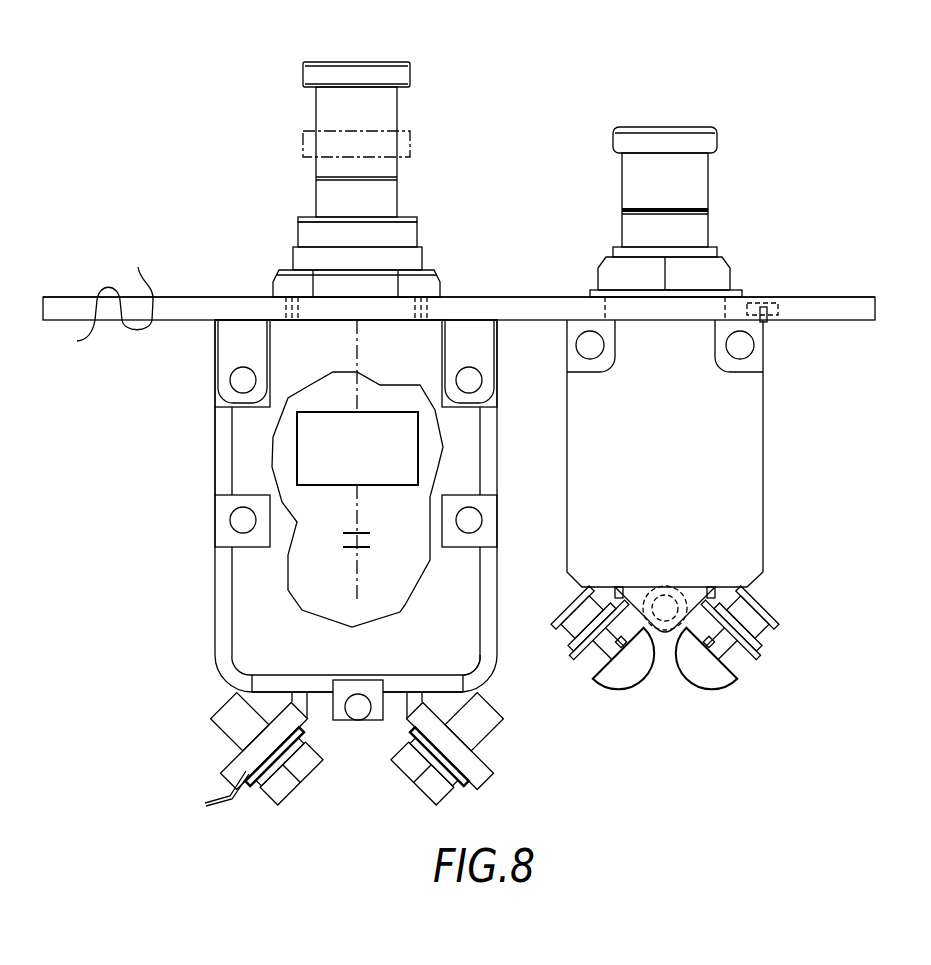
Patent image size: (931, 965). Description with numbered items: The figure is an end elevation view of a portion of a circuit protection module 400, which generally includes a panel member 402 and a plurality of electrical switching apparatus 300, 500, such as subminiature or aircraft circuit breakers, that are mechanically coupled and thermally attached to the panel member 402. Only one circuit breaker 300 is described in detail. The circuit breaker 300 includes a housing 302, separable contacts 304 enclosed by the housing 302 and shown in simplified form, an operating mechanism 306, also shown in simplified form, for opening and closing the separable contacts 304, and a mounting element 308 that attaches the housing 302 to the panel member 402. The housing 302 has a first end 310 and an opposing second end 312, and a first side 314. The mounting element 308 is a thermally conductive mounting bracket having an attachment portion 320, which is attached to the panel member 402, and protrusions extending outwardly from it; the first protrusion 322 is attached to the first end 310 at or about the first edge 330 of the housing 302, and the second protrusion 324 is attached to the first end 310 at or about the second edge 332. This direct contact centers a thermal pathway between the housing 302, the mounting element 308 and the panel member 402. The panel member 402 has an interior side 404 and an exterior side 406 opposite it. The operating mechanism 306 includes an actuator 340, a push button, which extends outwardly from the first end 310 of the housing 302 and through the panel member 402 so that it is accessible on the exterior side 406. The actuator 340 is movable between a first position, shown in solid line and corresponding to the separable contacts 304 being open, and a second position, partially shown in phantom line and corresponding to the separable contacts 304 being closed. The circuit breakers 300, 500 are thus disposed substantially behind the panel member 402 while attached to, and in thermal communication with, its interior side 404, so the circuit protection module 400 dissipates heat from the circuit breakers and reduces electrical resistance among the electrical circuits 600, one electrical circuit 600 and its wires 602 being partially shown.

The circuit breaker 300 is at (189, 682).
The housing 302 is at (214, 486).
The separable contacts 304 is at (362, 547).
The operating mechanism 306 is at (343, 485).
The mounting element 308 is at (199, 349).
The first end 310 is at (515, 336).
The second end 312 is at (522, 682).
The first side 314 is at (459, 647).
The attachment portion 320 is at (213, 327).
The first protrusion 322 is at (253, 342).
The second protrusion 324 is at (453, 342).
The first edge 330 is at (217, 433).
The second edge 332 is at (490, 445).
The actuator 340 is at (377, 62).
The circuit protection module 400 is at (114, 428).
The panel member 402 is at (88, 282).
The interior side 404 is at (138, 284).
The exterior side 406 is at (84, 320).
The electrical switching apparatus 500 is at (777, 569).
The electrical circuit 600 is at (213, 826).
The wires 602 is at (217, 797).